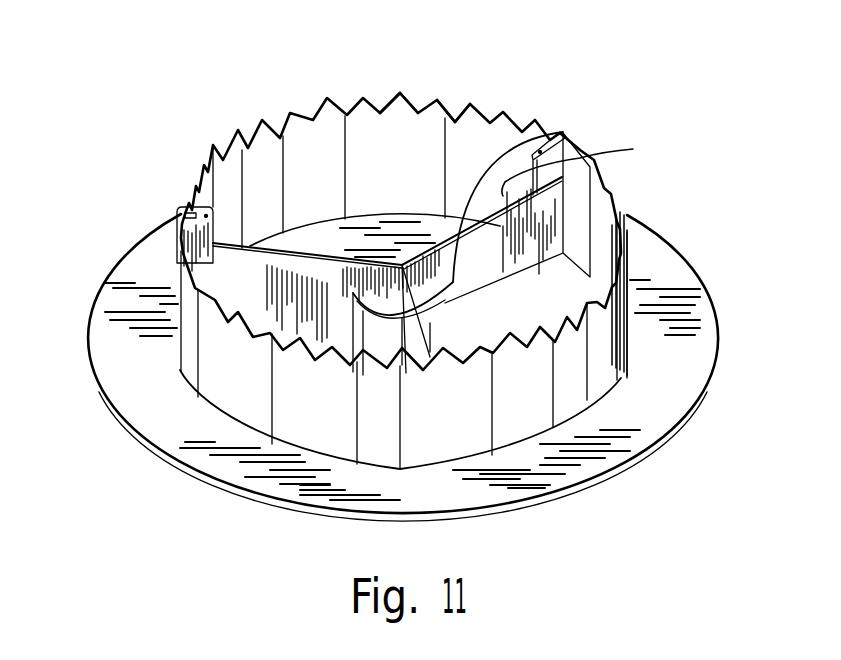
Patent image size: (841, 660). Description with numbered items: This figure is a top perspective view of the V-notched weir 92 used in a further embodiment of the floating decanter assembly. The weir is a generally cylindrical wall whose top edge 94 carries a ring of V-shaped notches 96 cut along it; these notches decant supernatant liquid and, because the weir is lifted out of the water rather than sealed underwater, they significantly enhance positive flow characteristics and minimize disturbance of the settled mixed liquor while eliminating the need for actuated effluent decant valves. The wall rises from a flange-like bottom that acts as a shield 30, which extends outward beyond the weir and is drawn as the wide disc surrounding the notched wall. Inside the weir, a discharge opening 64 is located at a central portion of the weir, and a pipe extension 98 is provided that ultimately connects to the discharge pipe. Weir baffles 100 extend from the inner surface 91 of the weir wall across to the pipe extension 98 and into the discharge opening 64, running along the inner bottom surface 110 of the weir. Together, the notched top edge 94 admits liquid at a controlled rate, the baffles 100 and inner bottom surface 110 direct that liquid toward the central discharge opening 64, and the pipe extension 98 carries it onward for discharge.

The shield 30 is at (657, 414).
The discharge opening 64 is at (457, 303).
The inner surface 91 is at (412, 174).
The V-notched weir 92 is at (180, 128).
The top edge 94 is at (401, 92).
The V-shaped notches 96 is at (455, 121).
The pipe extension 98 is at (407, 262).
The weir baffles 100 is at (570, 204).
The inner bottom surface 110 is at (323, 242).